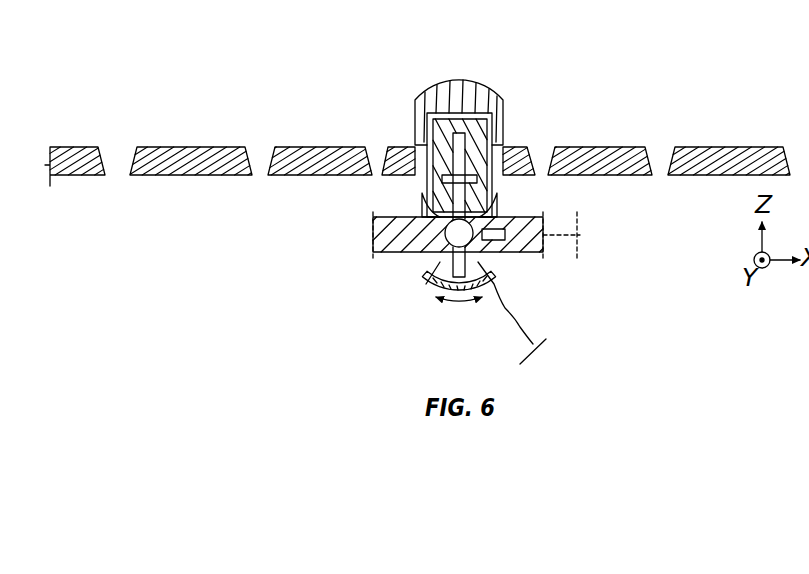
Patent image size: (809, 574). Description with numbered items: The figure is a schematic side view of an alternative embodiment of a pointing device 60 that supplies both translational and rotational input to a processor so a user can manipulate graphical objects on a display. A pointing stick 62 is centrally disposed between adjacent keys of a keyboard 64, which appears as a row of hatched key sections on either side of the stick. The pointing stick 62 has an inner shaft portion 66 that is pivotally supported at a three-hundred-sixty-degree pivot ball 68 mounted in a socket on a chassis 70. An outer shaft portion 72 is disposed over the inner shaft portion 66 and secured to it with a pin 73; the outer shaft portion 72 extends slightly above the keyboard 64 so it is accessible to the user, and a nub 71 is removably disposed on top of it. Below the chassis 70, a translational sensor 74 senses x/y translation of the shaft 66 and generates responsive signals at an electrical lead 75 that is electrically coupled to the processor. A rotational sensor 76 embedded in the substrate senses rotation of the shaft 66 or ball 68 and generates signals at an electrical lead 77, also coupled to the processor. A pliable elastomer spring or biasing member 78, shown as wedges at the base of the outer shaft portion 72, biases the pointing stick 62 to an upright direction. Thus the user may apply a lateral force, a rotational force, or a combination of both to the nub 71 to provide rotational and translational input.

The pointing device 60 is at (604, 46).
The pointing stick 62 is at (457, 205).
The keyboard 64 is at (662, 128).
The inner shaft portion 66 is at (466, 211).
The pivot ball 68 is at (452, 237).
The chassis 70 is at (372, 231).
The nub 71 is at (462, 86).
The outer shaft portion 72 is at (492, 120).
The pin 73 is at (477, 178).
The translational sensor 74 is at (420, 290).
The electrical lead 75 is at (522, 331).
The rotational sensor 76 is at (496, 256).
The electrical lead 77 is at (558, 236).
The biasing member 78 is at (424, 212).